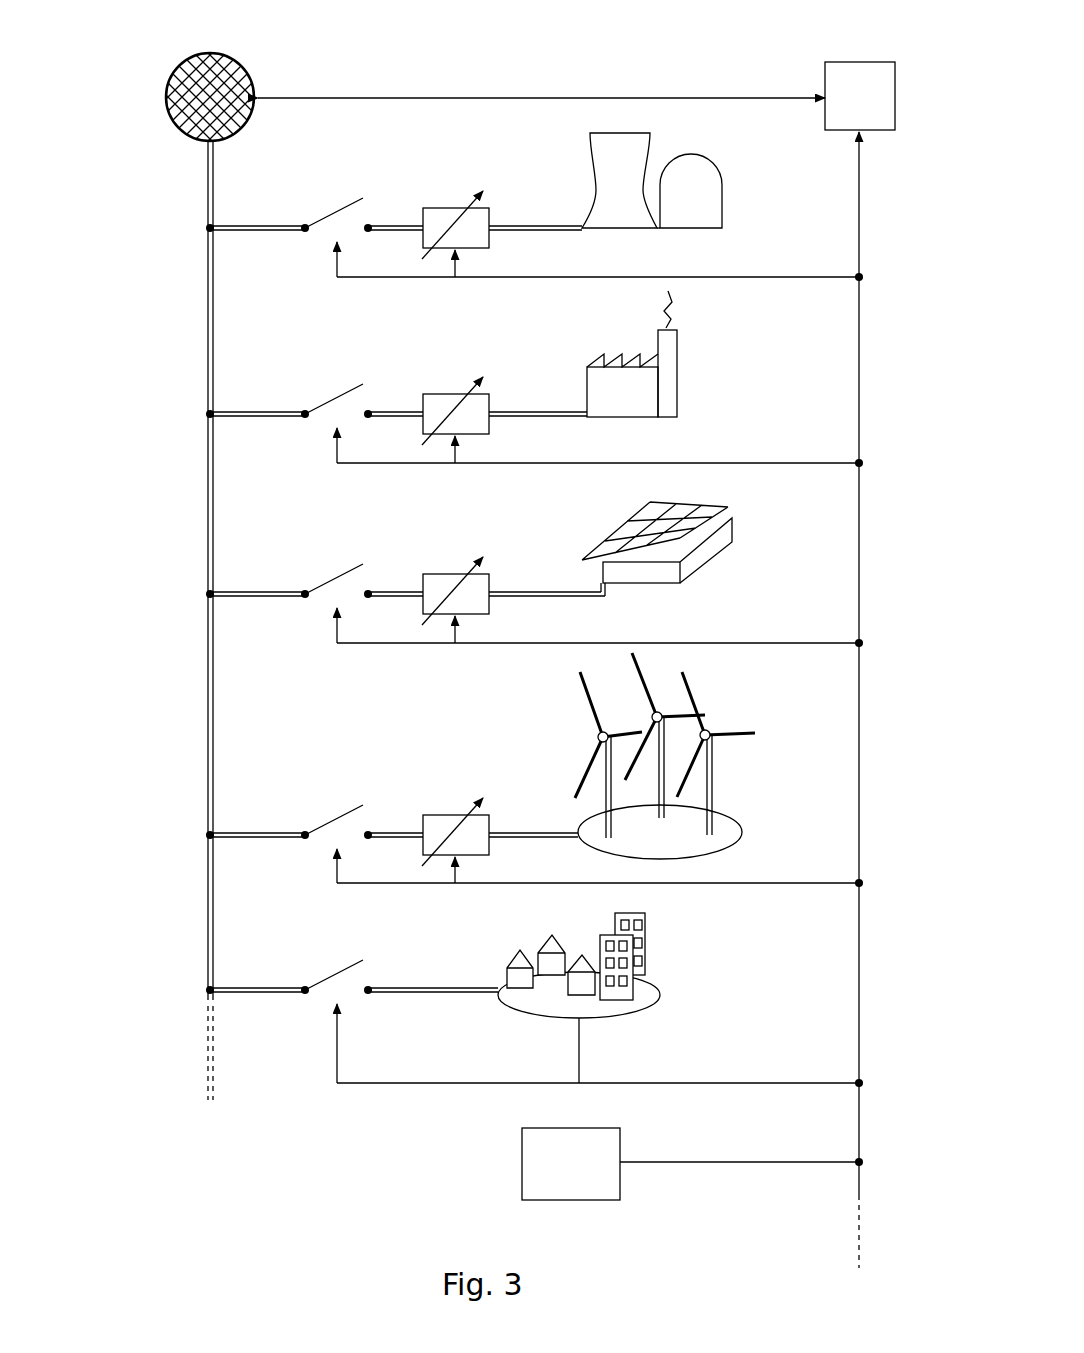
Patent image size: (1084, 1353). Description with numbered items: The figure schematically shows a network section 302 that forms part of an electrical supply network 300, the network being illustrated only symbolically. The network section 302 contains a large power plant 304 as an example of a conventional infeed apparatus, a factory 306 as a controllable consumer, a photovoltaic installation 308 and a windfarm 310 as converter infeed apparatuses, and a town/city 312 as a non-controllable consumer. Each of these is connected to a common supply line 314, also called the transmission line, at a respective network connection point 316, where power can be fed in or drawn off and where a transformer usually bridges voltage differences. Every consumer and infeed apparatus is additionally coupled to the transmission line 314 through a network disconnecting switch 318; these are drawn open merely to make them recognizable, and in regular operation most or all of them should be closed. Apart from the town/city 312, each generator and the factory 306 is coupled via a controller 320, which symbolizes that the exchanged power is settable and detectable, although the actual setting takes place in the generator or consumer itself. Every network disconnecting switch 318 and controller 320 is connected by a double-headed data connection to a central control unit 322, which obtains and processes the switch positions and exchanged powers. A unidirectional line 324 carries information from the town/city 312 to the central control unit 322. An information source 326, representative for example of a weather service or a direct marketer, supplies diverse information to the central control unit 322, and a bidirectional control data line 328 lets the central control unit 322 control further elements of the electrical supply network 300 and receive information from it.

The electrical supply network 300 is at (185, 42).
The network section 302 is at (133, 882).
The large power plant 304 is at (712, 205).
The factory 306 is at (672, 378).
The photovoltaic installation 308 is at (730, 555).
The windfarm 310 is at (745, 830).
The town/city 312 is at (660, 985).
The supply line 314 is at (208, 678).
The network connection point 316 is at (206, 990).
The network disconnecting switch 318 is at (345, 188).
The controller 320 is at (455, 180).
The central control unit 322 is at (858, 70).
The unidirectional line 324 is at (583, 1068).
The information source 326 is at (535, 1148).
The control data line 328 is at (553, 97).